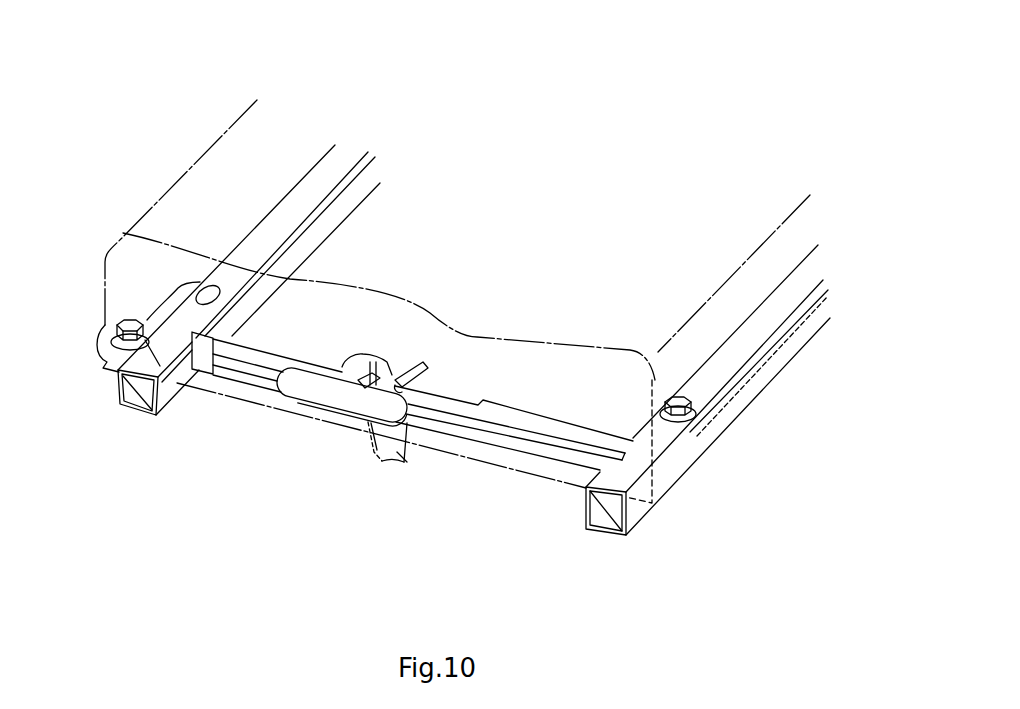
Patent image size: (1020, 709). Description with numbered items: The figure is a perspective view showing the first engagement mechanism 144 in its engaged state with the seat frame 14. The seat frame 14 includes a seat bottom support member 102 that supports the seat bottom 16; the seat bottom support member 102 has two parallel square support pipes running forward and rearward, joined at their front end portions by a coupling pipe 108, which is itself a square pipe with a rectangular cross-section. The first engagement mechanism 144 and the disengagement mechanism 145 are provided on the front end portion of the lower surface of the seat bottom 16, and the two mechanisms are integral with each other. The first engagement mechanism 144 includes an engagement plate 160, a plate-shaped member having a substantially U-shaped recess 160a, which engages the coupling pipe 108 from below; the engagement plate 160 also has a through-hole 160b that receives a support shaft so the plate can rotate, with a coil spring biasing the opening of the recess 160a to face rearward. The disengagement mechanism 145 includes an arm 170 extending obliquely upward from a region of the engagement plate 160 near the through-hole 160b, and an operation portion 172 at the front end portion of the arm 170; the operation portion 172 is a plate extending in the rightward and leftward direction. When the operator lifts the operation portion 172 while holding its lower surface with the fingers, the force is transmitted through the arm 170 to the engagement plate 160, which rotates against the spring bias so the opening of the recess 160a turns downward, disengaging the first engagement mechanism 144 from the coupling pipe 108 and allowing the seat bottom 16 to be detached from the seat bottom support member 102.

The seat frame 14 is at (672, 498).
The seat bottom 16 is at (203, 143).
The seat bottom support member 102 is at (695, 467).
The coupling pipe 108 is at (532, 425).
The first engagement mechanism 144 is at (383, 460).
The disengagement mechanism 145 is at (323, 393).
The engagement plate 160 is at (423, 397).
The recess 160a is at (428, 375).
The through-hole 160b is at (406, 368).
The arm 170 is at (377, 365).
The operation portion 172 is at (281, 384).